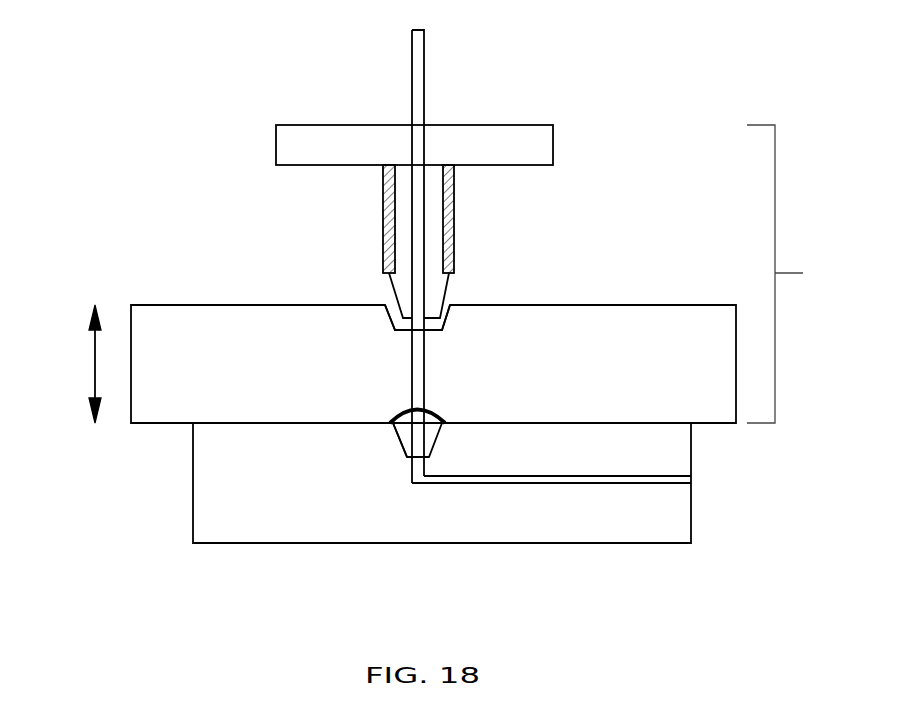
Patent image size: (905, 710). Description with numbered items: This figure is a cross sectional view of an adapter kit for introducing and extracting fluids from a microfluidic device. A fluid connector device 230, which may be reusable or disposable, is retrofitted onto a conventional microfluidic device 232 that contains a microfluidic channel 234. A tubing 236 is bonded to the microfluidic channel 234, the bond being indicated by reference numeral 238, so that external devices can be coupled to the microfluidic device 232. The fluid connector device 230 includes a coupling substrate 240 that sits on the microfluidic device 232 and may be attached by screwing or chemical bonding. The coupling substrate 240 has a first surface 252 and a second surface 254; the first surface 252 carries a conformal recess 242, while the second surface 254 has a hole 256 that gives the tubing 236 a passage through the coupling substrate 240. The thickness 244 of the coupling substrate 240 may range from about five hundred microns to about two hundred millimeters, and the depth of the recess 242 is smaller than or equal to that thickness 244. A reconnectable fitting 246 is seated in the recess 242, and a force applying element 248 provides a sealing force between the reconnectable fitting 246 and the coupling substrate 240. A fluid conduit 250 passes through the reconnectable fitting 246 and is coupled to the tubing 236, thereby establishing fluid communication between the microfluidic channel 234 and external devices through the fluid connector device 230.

The fluid connector device 230 is at (799, 274).
The microfluidic device 232 is at (691, 513).
The microfluidic channel 234 is at (507, 483).
The tubing 236 is at (418, 440).
The bond 238 is at (398, 438).
The coupling substrate 240 is at (652, 374).
The conformal recess 242 is at (403, 322).
The thickness 244 is at (93, 365).
The reconnectable fitting 246 is at (515, 125).
The force applying element 248 is at (455, 225).
The fluid conduit 250 is at (425, 48).
The first surface 252 is at (222, 305).
The second surface 254 is at (158, 425).
The hole 256 is at (405, 410).